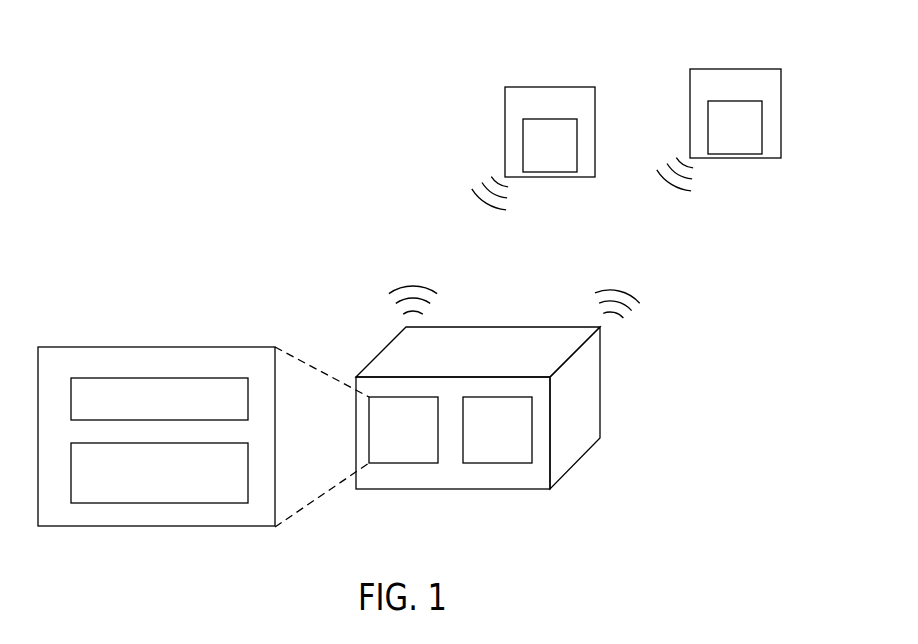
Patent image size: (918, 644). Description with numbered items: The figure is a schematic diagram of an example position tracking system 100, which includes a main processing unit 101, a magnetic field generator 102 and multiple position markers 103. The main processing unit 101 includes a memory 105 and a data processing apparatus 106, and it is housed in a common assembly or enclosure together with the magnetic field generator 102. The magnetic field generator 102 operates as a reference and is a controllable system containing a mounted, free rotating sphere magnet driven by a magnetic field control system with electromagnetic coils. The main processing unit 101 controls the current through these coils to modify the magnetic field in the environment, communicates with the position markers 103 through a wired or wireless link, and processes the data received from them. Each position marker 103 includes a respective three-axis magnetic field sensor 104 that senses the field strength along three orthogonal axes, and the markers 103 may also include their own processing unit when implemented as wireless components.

The position tracking system 100 is at (352, 149).
The main processing unit 101 is at (369, 433).
The magnetic field generator 102 is at (493, 463).
The position marker 103 is at (552, 87).
The magnetic field sensor 104 is at (523, 145).
The memory 105 is at (158, 378).
The data processing apparatus 106 is at (185, 503).